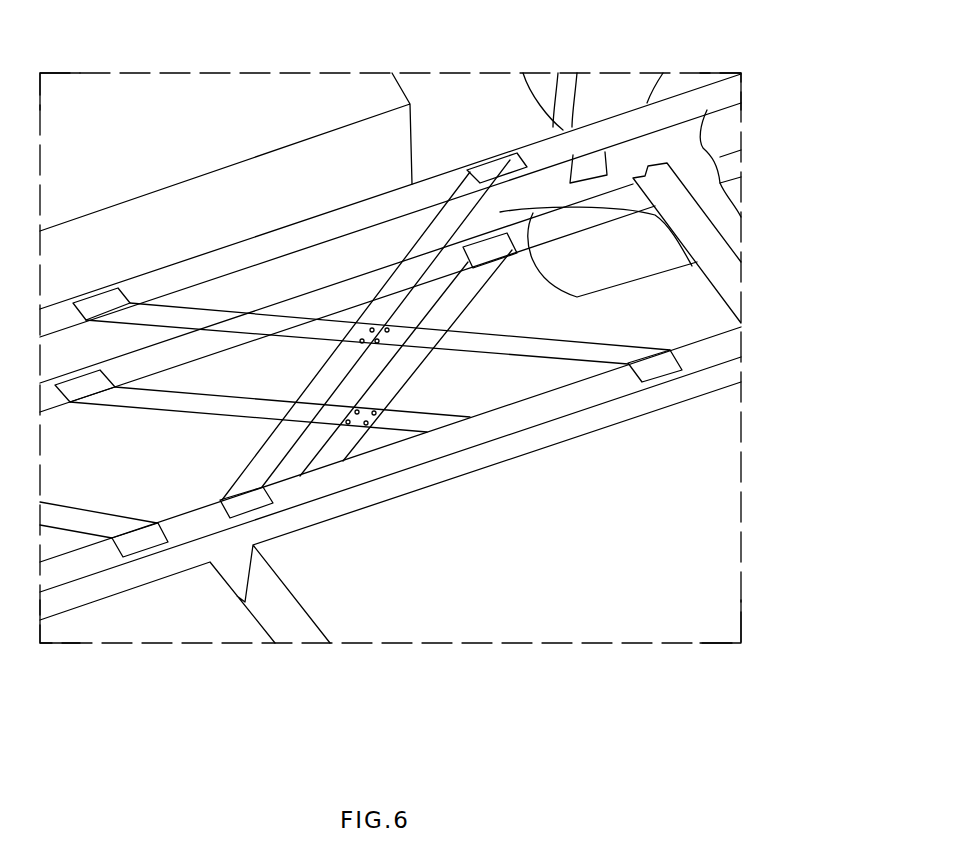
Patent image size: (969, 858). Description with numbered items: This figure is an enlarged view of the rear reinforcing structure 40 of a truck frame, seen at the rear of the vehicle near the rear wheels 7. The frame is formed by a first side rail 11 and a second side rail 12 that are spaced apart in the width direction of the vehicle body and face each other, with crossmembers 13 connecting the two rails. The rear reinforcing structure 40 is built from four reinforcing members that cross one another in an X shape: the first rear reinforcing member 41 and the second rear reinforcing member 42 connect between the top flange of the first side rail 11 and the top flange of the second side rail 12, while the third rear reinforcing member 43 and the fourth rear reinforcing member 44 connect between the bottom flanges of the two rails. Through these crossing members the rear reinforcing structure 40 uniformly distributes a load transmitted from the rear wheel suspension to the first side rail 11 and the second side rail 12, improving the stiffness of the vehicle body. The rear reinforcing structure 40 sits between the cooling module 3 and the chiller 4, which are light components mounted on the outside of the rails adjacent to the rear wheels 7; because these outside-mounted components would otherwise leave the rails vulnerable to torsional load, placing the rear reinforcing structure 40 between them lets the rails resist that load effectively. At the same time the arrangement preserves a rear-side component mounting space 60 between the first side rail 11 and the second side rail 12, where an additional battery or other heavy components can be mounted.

The cooling module 3 is at (185, 86).
The chiller 4 is at (705, 498).
The rear wheels 7 is at (608, 81).
The first side rail 11 is at (716, 375).
The second side rail 12 is at (452, 171).
The crossmembers 13 is at (735, 221).
The rear reinforcing structure 40 is at (241, 442).
The first rear reinforcing member 41 is at (355, 370).
The second rear reinforcing member 42 is at (520, 341).
The third rear reinforcing member 43 is at (470, 305).
The fourth rear reinforcing member 44 is at (200, 407).
The rear-side component mounting space 60 is at (280, 378).